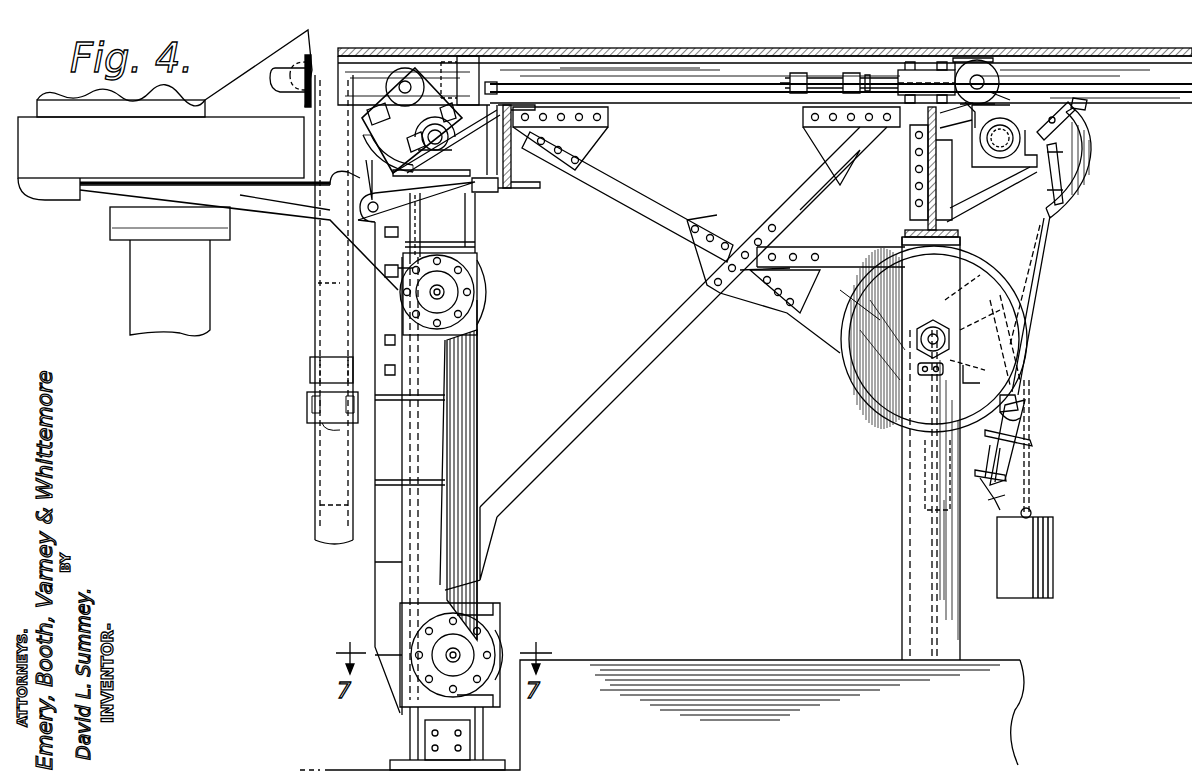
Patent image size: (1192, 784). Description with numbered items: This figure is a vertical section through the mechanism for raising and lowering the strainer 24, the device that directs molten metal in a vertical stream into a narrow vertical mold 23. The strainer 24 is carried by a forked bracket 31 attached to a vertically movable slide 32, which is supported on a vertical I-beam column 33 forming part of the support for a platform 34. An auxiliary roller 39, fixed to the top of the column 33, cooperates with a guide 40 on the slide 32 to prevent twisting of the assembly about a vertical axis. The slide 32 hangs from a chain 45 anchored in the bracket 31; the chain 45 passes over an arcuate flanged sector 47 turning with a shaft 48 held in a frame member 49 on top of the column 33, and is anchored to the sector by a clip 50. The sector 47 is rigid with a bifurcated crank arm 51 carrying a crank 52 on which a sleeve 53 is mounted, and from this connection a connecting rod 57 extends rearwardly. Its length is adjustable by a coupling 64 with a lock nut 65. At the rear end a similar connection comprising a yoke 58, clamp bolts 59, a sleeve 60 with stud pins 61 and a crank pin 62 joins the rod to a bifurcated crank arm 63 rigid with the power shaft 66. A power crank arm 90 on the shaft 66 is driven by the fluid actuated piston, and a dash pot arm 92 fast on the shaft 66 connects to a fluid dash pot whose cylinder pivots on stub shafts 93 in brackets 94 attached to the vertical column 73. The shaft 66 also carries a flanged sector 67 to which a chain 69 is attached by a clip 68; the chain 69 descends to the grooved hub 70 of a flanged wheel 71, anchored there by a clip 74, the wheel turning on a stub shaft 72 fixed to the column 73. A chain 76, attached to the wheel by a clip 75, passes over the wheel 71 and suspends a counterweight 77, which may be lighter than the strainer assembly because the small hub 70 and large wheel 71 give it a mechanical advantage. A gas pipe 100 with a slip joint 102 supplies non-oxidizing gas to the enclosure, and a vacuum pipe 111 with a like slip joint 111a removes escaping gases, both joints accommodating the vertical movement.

The mold 23 is at (202, 304).
The strainer 24 is at (76, 214).
The forked bracket 31 is at (275, 200).
The vertically movable slide 32 is at (358, 233).
The vertical I-beam column 33 is at (465, 455).
The platform 34 is at (490, 56).
The auxiliary roller 39 is at (360, 203).
The guide 40 is at (443, 294).
The chain 45 is at (368, 170).
The arcuate flanged sector 47 is at (372, 142).
The shaft 48 is at (440, 143).
The frame member 49 is at (503, 190).
The clip 50 is at (380, 112).
The bifurcated crank arm 51 is at (448, 70).
The crank 52 is at (398, 80).
The sleeve 53 is at (407, 82).
The connecting rod 57 is at (630, 84).
The yoke 58 is at (975, 62).
The clamp bolts 59 is at (912, 68).
The sleeve 60 is at (985, 80).
The stud pins 61 is at (978, 58).
The crank pin 62 is at (985, 85).
The bifurcated crank arm 63 is at (1003, 112).
The coupling 64 is at (800, 80).
The lock nut 65 is at (865, 78).
The power shaft 66 is at (996, 150).
The flanged sector 67 is at (1088, 172).
The clip 68 is at (1087, 105).
The chain 69 is at (1035, 262).
The grooved hub 70 is at (948, 300).
The flanged wheel 71 is at (868, 395).
The stub shaft 72 is at (928, 325).
The vertical column 73 is at (908, 568).
The clip 74 is at (940, 378).
The clip 75 is at (978, 450).
The chain 76 is at (1032, 478).
The counterweight 77 is at (1053, 556).
The power crank arm 90 is at (910, 142).
The dash pot arm 92 is at (1040, 125).
The stub shafts 93 is at (1018, 402).
The brackets 94 is at (1020, 418).
The gas pipe 100 is at (320, 326).
The slip joint 102 is at (310, 412).
The vacuum pipe 111 is at (318, 283).
The slip joint 111a is at (312, 373).